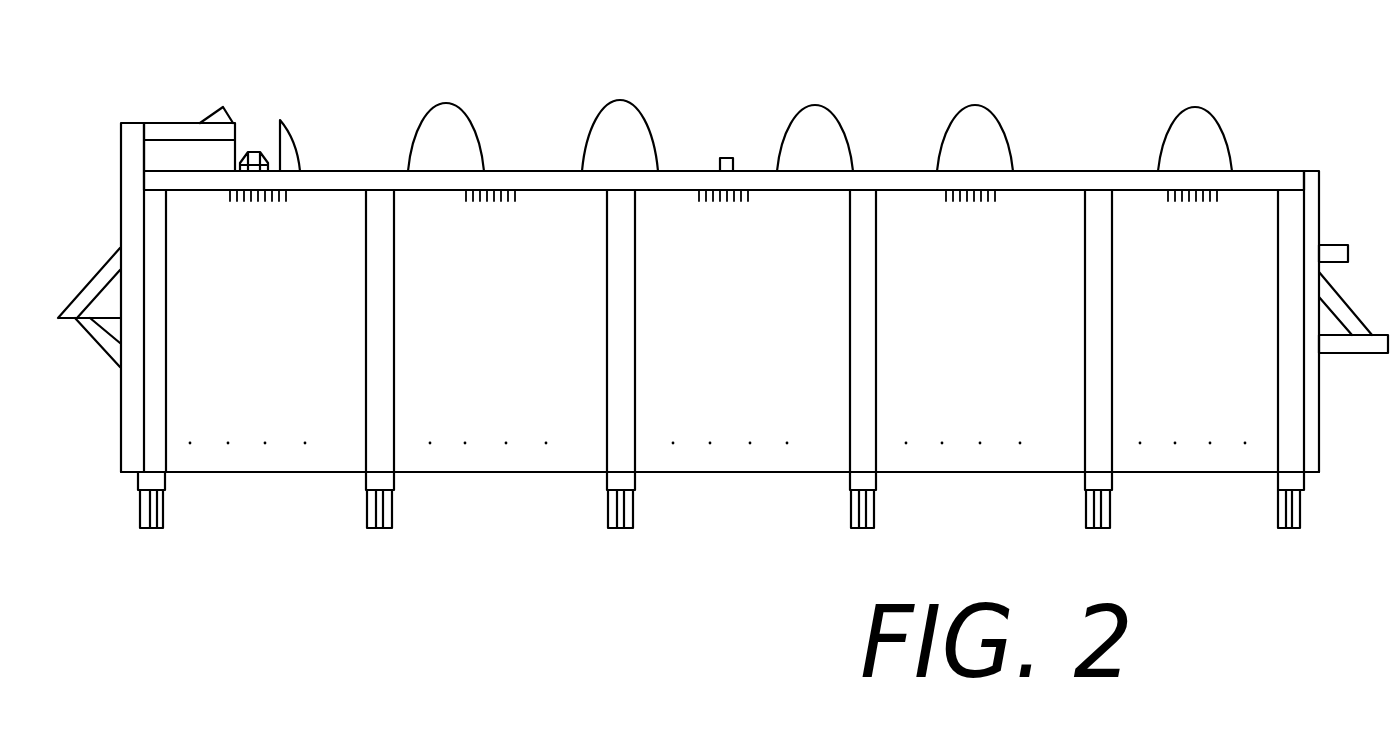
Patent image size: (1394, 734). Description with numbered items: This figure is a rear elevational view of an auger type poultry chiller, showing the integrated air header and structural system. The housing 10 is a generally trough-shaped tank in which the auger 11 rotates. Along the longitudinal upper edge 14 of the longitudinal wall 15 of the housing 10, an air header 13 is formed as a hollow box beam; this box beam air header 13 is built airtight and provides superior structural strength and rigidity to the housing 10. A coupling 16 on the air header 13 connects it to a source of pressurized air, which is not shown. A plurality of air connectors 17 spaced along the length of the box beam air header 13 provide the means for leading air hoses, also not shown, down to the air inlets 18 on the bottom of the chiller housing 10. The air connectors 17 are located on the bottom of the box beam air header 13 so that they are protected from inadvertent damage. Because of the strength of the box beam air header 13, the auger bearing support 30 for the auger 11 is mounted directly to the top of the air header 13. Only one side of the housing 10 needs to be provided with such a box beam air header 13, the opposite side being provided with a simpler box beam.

The housing 10 is at (1043, 233).
The auger 11 is at (620, 123).
The air header 13 is at (1252, 182).
The longitudinal upper edge 14 is at (322, 197).
The longitudinal wall 15 is at (483, 305).
The coupling 16 is at (727, 158).
The air connectors 17 is at (518, 198).
The air inlets 18 is at (227, 460).
The auger bearing support 30 is at (253, 152).